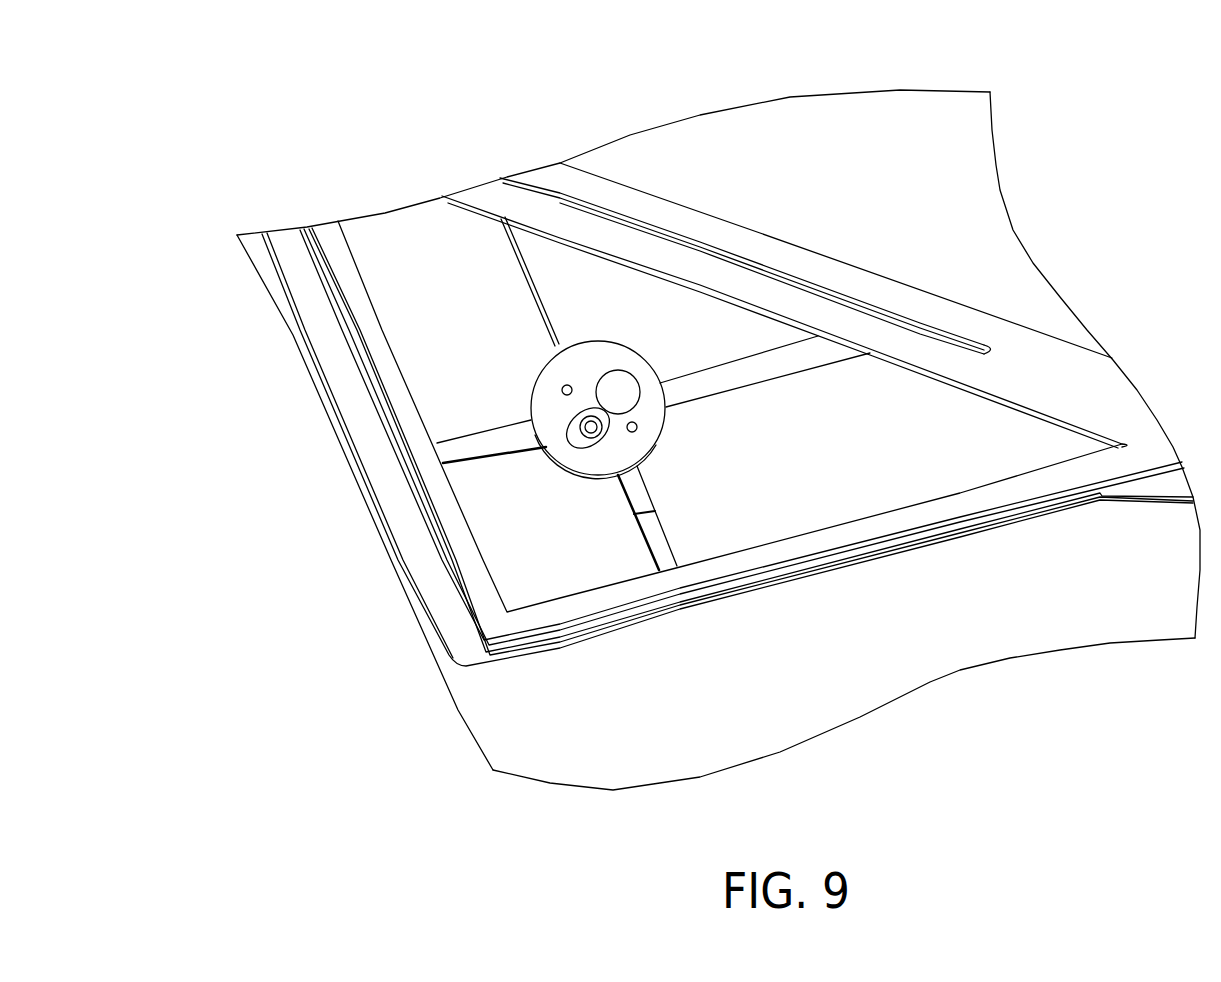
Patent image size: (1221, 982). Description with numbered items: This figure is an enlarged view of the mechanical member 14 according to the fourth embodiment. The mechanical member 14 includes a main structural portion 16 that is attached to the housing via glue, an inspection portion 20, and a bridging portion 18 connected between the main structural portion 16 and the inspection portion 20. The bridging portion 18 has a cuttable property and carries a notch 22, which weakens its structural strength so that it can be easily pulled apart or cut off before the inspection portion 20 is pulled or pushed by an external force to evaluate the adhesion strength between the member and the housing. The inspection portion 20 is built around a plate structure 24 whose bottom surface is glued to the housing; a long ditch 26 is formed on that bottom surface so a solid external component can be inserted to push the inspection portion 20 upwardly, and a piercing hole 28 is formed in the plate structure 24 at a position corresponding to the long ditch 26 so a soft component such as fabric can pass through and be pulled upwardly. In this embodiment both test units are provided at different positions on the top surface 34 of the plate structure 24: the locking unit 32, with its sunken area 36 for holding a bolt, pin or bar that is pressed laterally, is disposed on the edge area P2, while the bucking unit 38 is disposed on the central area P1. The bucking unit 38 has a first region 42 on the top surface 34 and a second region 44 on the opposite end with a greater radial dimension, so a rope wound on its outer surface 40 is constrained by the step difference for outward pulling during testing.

The mechanical member 14 is at (1034, 150).
The main structural portion 16 is at (606, 602).
The bridging portion 18 is at (656, 545).
The inspection portion 20 is at (548, 347).
The notch 22 is at (633, 517).
The plate structure 24 is at (603, 350).
The long ditch 26 is at (535, 378).
The piercing hole 28 is at (560, 390).
The locking unit 32 is at (594, 447).
The top surface 34 is at (636, 469).
The sunken area 36 is at (602, 478).
The bucking unit 38 is at (745, 187).
The outer surface 40 is at (590, 345).
The first region 42 is at (660, 372).
The second region 44 is at (618, 375).
The central area P1 is at (723, 395).
The edge area P2 is at (556, 448).